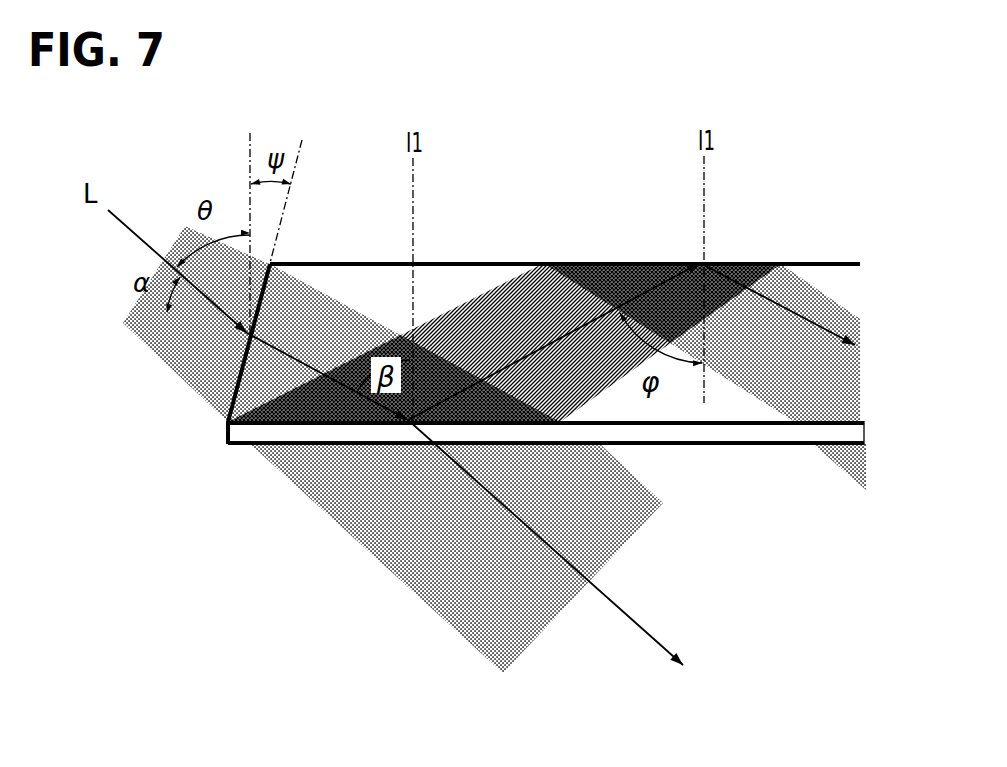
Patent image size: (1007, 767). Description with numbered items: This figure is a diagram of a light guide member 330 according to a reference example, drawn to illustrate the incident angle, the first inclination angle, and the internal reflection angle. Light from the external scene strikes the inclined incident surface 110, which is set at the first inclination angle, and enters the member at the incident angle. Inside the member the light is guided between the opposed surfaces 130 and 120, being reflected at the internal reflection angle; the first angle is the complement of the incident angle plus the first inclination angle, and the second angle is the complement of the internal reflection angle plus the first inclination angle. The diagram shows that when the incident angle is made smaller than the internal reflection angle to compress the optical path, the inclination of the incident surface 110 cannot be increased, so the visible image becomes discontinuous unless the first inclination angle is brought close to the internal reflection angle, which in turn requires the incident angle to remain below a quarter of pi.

The incident surface 110 is at (233, 382).
The reflective layer 120 is at (777, 444).
The light emitting surface 130 is at (583, 262).
The light guide plate 330 is at (481, 344).